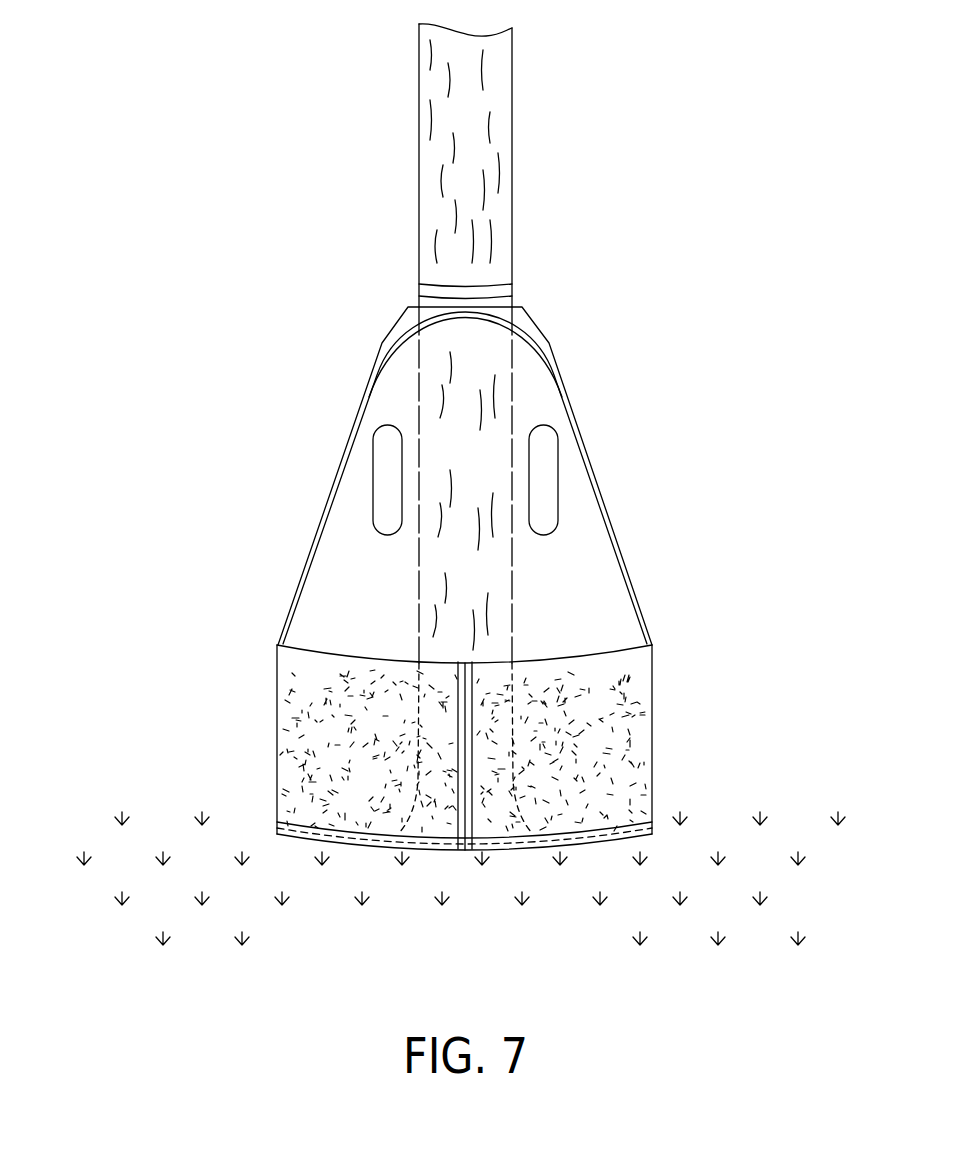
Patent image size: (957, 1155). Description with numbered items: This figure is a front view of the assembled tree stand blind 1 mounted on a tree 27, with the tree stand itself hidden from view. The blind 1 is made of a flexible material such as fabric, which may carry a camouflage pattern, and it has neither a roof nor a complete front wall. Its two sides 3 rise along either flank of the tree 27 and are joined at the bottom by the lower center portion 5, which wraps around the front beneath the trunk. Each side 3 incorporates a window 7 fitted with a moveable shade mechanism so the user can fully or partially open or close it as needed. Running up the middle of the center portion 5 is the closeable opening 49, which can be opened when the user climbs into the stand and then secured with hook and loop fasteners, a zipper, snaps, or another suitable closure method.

The tree stand blind 1 is at (645, 349).
The side 3 is at (364, 397).
The lower center portion 5 is at (315, 735).
The window 7 is at (380, 471).
The tree 27 is at (419, 93).
The closeable opening 49 is at (462, 707).